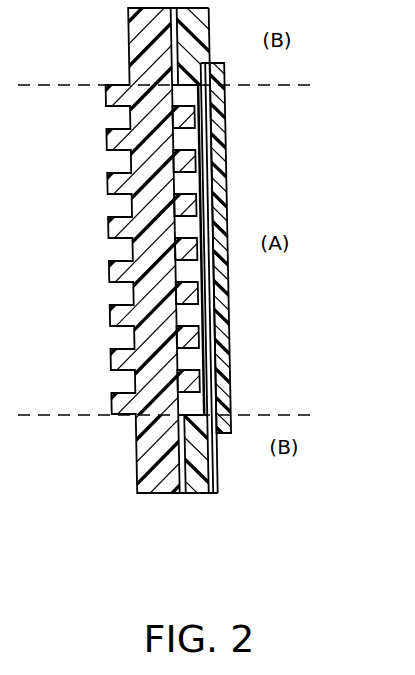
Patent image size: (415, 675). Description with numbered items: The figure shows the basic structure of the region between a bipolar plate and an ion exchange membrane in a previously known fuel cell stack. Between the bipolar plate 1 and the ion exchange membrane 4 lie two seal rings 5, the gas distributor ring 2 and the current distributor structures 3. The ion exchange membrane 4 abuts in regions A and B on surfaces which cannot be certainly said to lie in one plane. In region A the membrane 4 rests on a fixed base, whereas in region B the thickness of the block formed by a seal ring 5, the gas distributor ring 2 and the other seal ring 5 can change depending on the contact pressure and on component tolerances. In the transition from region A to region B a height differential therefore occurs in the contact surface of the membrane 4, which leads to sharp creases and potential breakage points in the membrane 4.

The bipolar plate 1 is at (145, 494).
The gas distributor ring 2 is at (203, 494).
The current distributor structures 3 is at (222, 370).
The ion exchange membrane 4 is at (222, 438).
The seal rings 5 is at (178, 494).